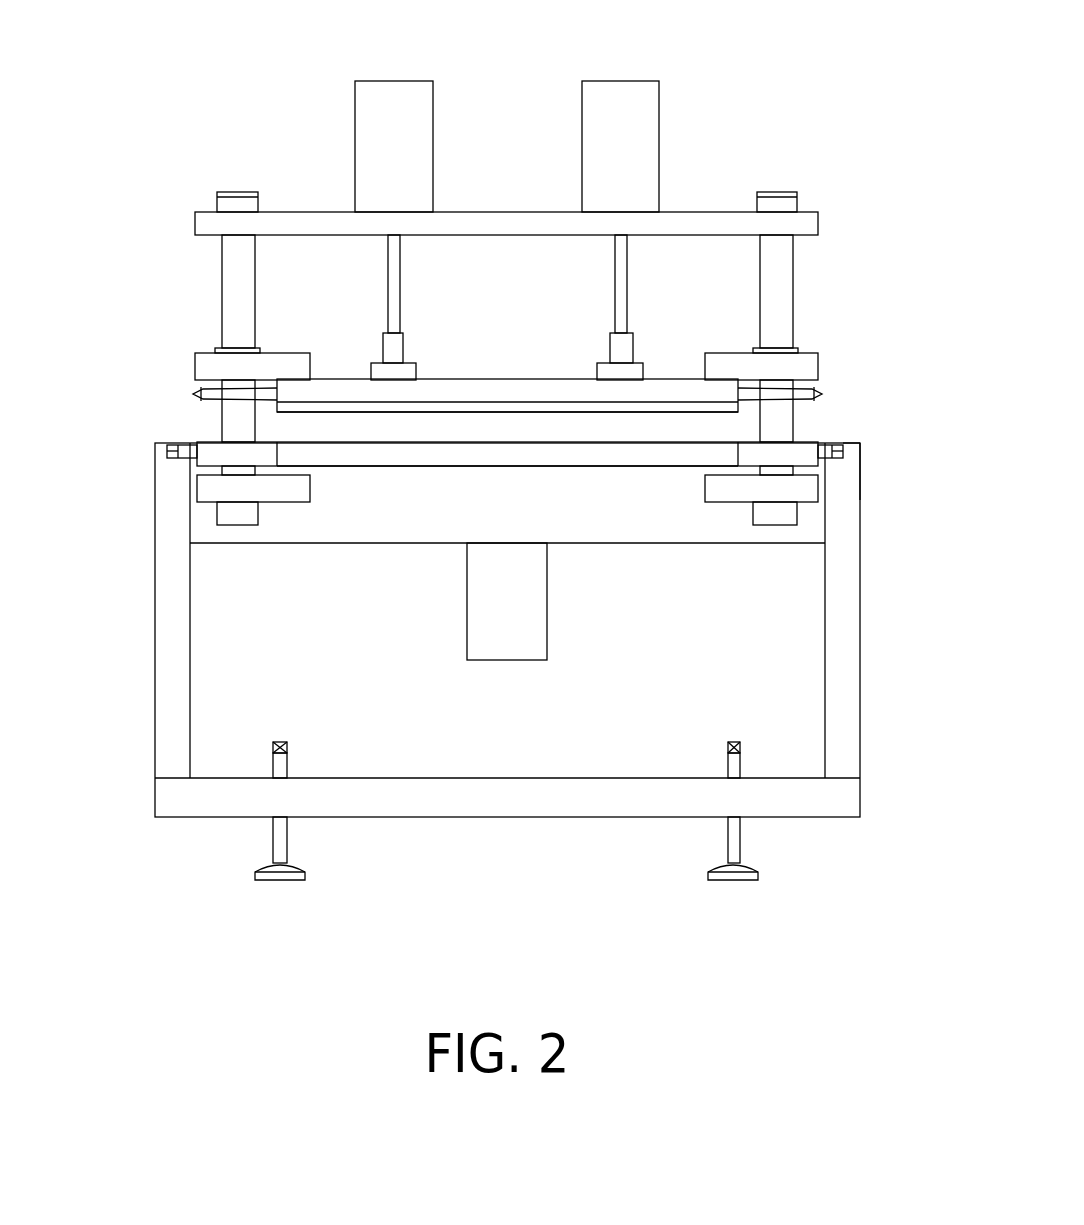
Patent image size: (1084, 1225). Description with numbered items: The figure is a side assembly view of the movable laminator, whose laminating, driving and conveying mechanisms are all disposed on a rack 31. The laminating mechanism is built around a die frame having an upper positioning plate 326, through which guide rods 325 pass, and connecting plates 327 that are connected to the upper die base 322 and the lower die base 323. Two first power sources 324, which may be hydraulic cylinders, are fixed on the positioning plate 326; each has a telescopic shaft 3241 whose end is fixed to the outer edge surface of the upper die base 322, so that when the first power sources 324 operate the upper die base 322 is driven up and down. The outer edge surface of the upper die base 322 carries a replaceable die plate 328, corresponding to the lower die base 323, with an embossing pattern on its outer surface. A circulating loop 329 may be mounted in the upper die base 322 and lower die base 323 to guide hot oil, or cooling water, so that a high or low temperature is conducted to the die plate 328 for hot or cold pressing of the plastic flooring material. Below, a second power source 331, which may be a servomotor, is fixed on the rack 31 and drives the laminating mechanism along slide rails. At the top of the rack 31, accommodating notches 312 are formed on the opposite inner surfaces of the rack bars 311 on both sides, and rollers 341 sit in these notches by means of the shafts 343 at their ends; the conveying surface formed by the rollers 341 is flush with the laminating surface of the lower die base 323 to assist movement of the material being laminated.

The rack 31 is at (545, 795).
The rack bars 311 is at (850, 447).
The accommodating notches 312 is at (172, 445).
The upper die base 322 is at (522, 392).
The lower die base 323 is at (356, 470).
The first power sources 324 is at (378, 118).
The guide rods 325 is at (233, 260).
The upper positioning plate 326 is at (685, 220).
The connecting plates 327 is at (207, 363).
The die plate 328 is at (572, 405).
The circulating loop 329 is at (813, 390).
The second power source 331 is at (475, 610).
The rollers 341 is at (668, 448).
The shafts 343 is at (833, 457).
The telescopic shaft 3241 is at (397, 287).